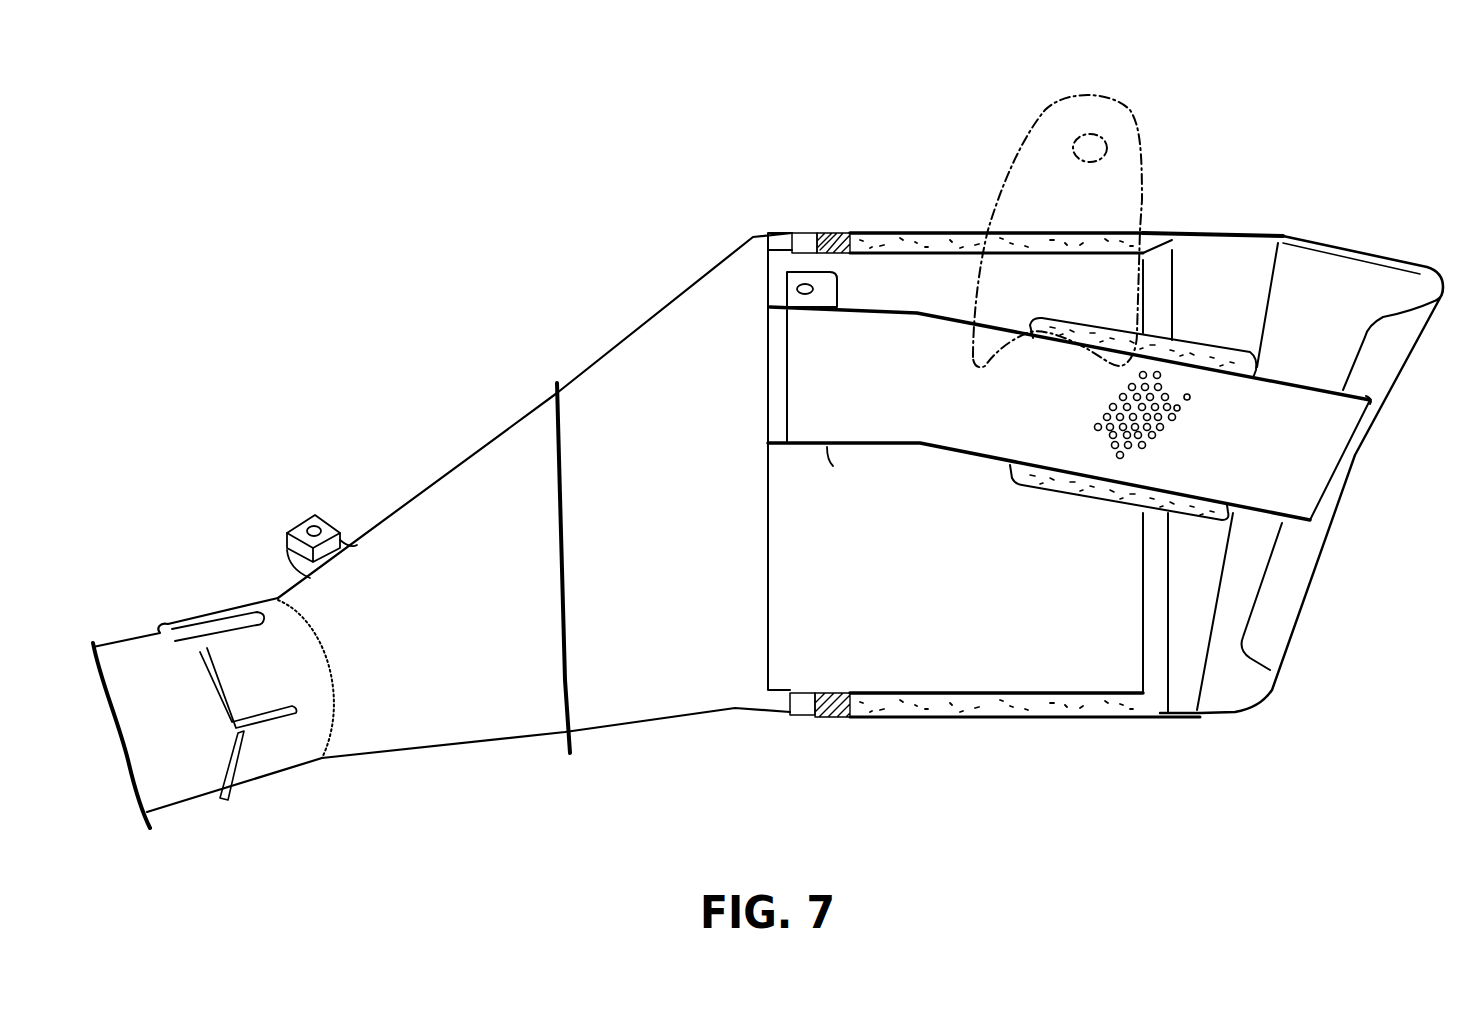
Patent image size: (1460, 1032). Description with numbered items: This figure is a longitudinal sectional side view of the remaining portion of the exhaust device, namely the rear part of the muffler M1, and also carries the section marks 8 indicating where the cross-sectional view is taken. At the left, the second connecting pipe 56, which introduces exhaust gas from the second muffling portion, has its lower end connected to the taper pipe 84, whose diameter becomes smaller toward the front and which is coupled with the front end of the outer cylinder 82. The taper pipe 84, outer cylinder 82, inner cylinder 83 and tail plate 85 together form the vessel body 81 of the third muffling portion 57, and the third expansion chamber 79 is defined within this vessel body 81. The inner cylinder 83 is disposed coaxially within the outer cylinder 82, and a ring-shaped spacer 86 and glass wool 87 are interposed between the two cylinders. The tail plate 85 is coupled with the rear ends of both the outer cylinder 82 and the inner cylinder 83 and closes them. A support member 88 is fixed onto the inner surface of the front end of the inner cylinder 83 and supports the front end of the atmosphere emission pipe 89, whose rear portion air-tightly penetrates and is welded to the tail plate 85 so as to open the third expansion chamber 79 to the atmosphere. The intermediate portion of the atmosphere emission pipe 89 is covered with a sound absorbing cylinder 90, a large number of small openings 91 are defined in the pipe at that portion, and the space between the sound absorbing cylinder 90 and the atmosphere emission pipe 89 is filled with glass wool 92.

The second connecting pipe 56 is at (138, 664).
The muffler M1 is at (385, 503).
The taper pipe 84 is at (477, 452).
The vessel body 81 is at (648, 303).
The third expansion chamber 79 is at (690, 612).
The ring-shaped spacer 86 is at (825, 230).
The outer cylinder 82 is at (925, 232).
The support member 88 is at (840, 288).
The glass wool 87 is at (1057, 233).
The inner cylinder 83 is at (940, 257).
The atmosphere emission pipe 89 is at (967, 457).
The sound absorbing cylinder 90 is at (1210, 347).
The glass wool 92 is at (1100, 488).
The small openings 91 is at (1190, 399).
The third muffling portion 57 is at (1232, 222).
The tail plate 85 is at (1348, 250).
The section line for FIG. 8 is at (825, 135).